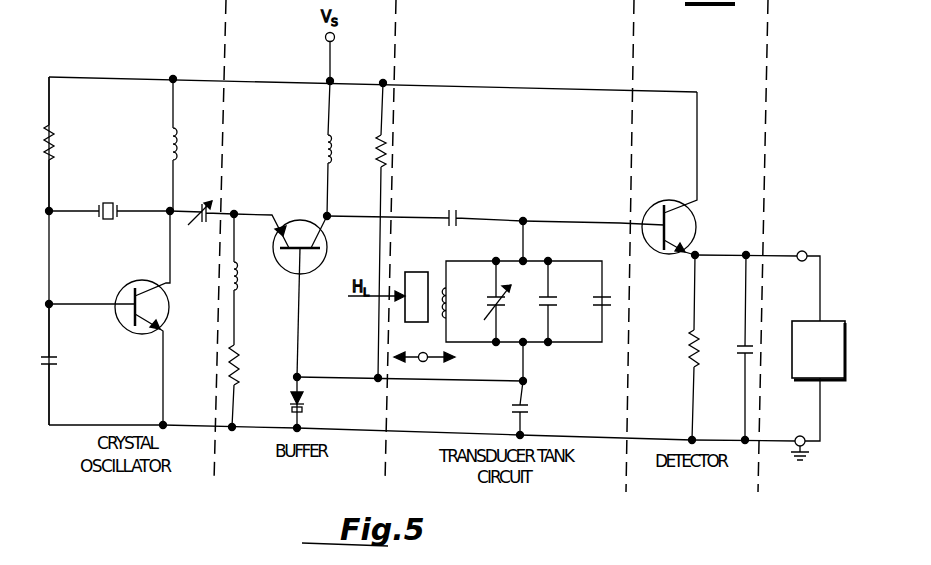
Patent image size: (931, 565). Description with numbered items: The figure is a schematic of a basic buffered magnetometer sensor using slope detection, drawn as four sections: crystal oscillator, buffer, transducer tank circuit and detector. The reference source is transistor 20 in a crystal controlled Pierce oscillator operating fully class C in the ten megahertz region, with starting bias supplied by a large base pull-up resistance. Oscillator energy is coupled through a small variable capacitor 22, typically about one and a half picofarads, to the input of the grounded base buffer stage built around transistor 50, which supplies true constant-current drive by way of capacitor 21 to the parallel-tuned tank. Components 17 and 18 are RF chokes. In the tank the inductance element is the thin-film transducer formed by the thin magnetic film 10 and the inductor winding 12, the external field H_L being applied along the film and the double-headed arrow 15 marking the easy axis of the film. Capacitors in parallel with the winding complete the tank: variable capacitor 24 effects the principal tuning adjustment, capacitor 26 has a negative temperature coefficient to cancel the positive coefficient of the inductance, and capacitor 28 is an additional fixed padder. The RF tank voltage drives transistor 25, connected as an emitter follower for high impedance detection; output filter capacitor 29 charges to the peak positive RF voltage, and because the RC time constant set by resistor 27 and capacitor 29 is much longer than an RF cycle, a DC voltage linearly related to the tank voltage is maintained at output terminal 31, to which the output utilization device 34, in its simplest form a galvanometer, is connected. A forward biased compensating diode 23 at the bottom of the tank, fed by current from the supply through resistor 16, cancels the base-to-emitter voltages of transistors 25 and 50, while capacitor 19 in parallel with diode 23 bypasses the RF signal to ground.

The thin magnetic film 10 is at (418, 272).
The winding 12 is at (449, 298).
The double-headed arrow 15 is at (449, 355).
The resistor 16 is at (378, 152).
The RF choke 17 is at (322, 148).
The RF choke 18 is at (239, 278).
The capacitor 19 is at (530, 407).
The transistor 20 is at (140, 335).
The capacitor 21 is at (452, 207).
The variable capacitor 22 is at (198, 205).
The compensating diode 23 is at (304, 401).
The variable capacitor 24 is at (504, 305).
The transistor 25 is at (663, 205).
The capacitor 26 is at (555, 301).
The resistor 27 is at (690, 352).
The capacitor 28 is at (596, 310).
The output filter capacitor 29 is at (742, 348).
The output terminal 31 is at (802, 251).
The output utilization device 34 is at (799, 380).
The transistor 50 is at (298, 222).